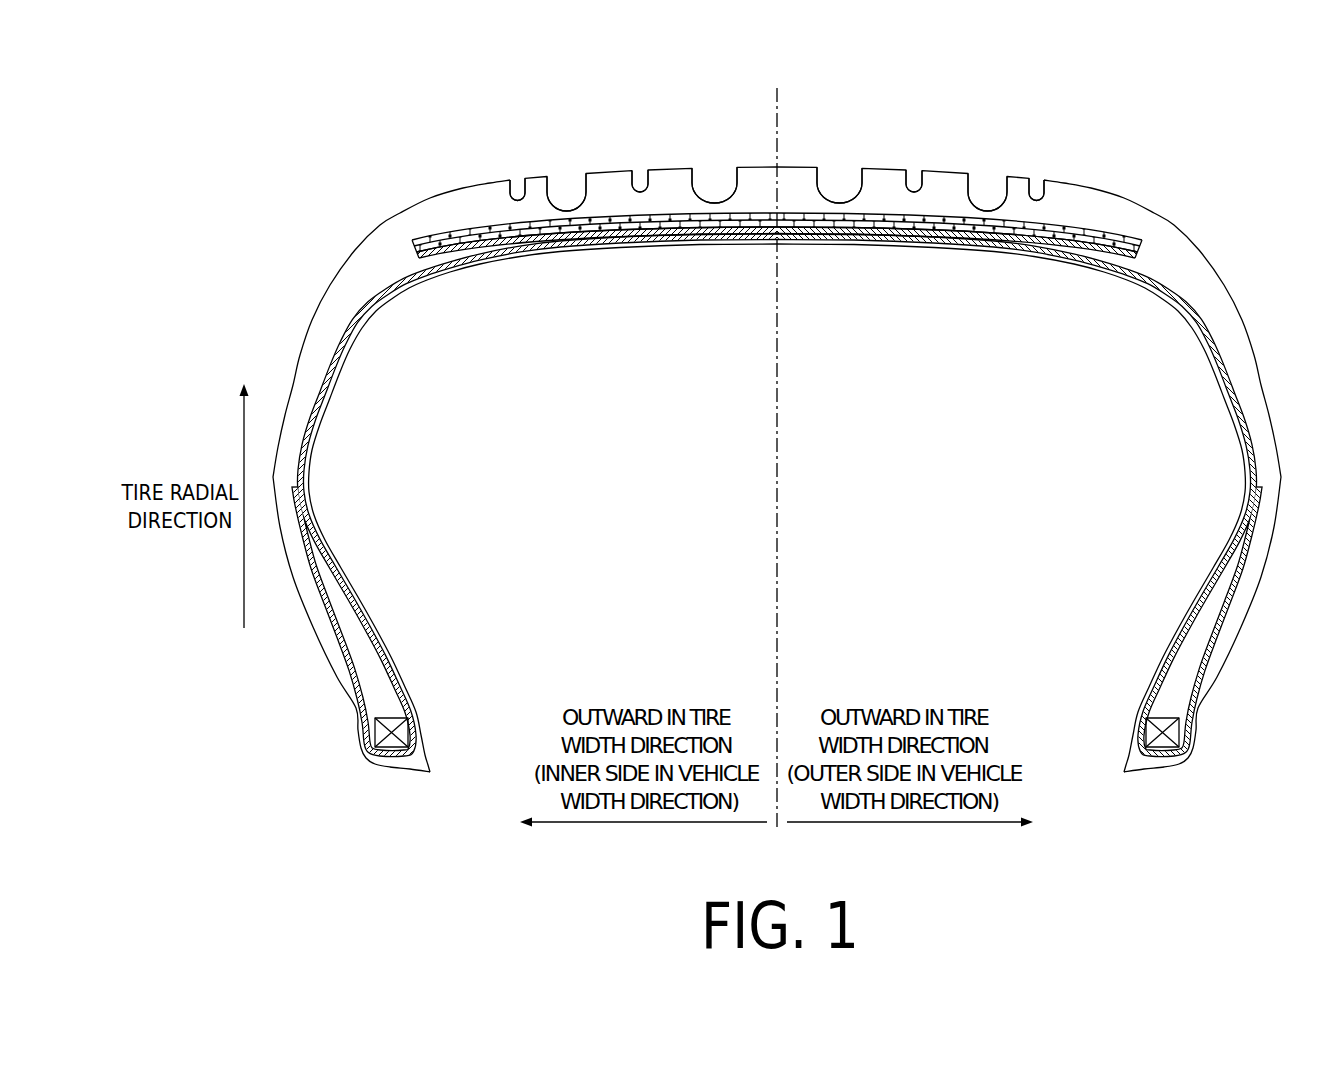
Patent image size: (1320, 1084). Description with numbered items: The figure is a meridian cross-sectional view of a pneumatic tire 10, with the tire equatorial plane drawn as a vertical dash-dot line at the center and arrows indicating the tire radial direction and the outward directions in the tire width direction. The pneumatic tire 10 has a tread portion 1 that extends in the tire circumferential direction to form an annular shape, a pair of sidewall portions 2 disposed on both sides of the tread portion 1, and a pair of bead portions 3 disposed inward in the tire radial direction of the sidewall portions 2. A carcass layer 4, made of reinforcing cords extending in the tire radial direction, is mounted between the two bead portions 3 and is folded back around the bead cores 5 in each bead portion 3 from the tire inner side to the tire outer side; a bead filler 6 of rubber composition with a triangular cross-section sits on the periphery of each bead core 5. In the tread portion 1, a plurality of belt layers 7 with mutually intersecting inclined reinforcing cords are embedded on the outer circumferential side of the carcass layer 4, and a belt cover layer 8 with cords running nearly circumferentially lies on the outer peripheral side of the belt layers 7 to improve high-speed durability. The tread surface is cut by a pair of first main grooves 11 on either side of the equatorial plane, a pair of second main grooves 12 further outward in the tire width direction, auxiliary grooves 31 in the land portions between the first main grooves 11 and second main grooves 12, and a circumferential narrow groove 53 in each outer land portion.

The pneumatic tire 10 is at (777, 440).
The tread portion 1 is at (777, 131).
The sidewall portion 2 is at (327, 274).
The bead portion 3 is at (777, 624).
The carcass layer 4 is at (1216, 344).
The bead core 5 is at (404, 726).
The bead filler 6 is at (385, 690).
The belt layer 7 is at (1068, 243).
The belt cover layer 8 is at (1111, 235).
The first main groove 11 is at (700, 168).
The second main groove 12 is at (562, 170).
The auxiliary groove 31 is at (639, 168).
The circumferential narrow groove 53 is at (518, 172).